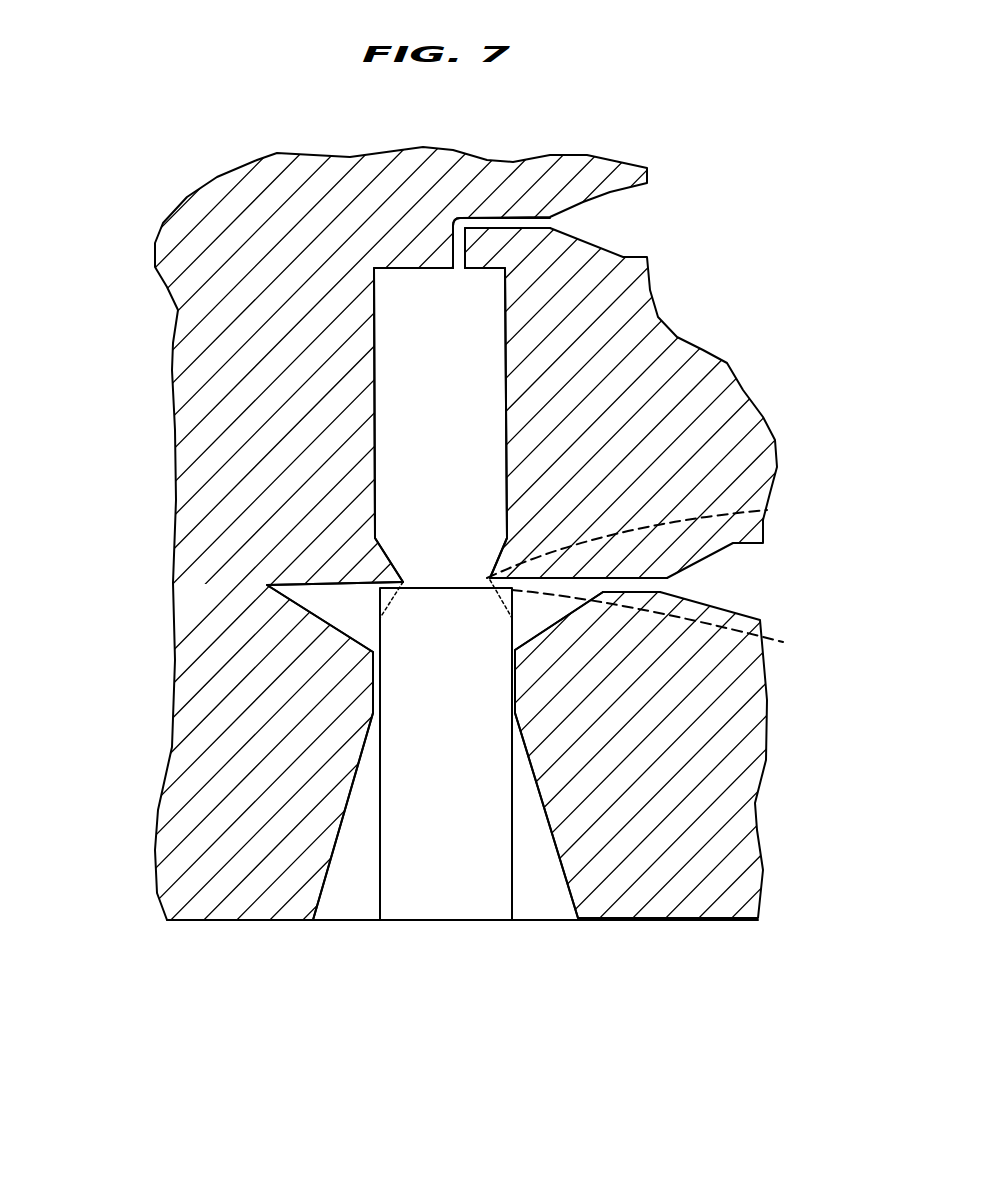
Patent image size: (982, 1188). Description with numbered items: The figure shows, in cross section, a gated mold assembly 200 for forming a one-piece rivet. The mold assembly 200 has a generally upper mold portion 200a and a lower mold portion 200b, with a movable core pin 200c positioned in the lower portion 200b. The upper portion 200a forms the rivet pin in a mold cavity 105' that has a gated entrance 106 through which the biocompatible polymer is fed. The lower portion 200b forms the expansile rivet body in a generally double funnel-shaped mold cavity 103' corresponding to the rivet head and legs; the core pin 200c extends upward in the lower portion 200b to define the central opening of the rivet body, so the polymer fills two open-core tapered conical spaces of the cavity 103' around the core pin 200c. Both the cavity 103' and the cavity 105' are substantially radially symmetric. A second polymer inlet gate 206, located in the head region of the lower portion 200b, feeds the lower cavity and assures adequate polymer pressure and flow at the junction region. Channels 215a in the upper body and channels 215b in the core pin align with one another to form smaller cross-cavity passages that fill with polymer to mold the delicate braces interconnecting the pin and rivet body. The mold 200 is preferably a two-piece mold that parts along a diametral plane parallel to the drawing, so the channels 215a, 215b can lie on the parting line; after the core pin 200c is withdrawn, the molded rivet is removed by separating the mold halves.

The gated mold assembly 200 is at (140, 362).
The upper mold portion 200a is at (305, 422).
The lower mold portion 200b is at (290, 778).
The core pin 200c is at (450, 833).
The mold cavity 105' is at (557, 425).
The gated entrance 106 is at (455, 248).
The second polymer inlet gate 206 is at (633, 587).
The channels in upper body 215a is at (767, 510).
The channels in core pin 215b is at (680, 622).
The mold cavity 103' is at (467, 796).